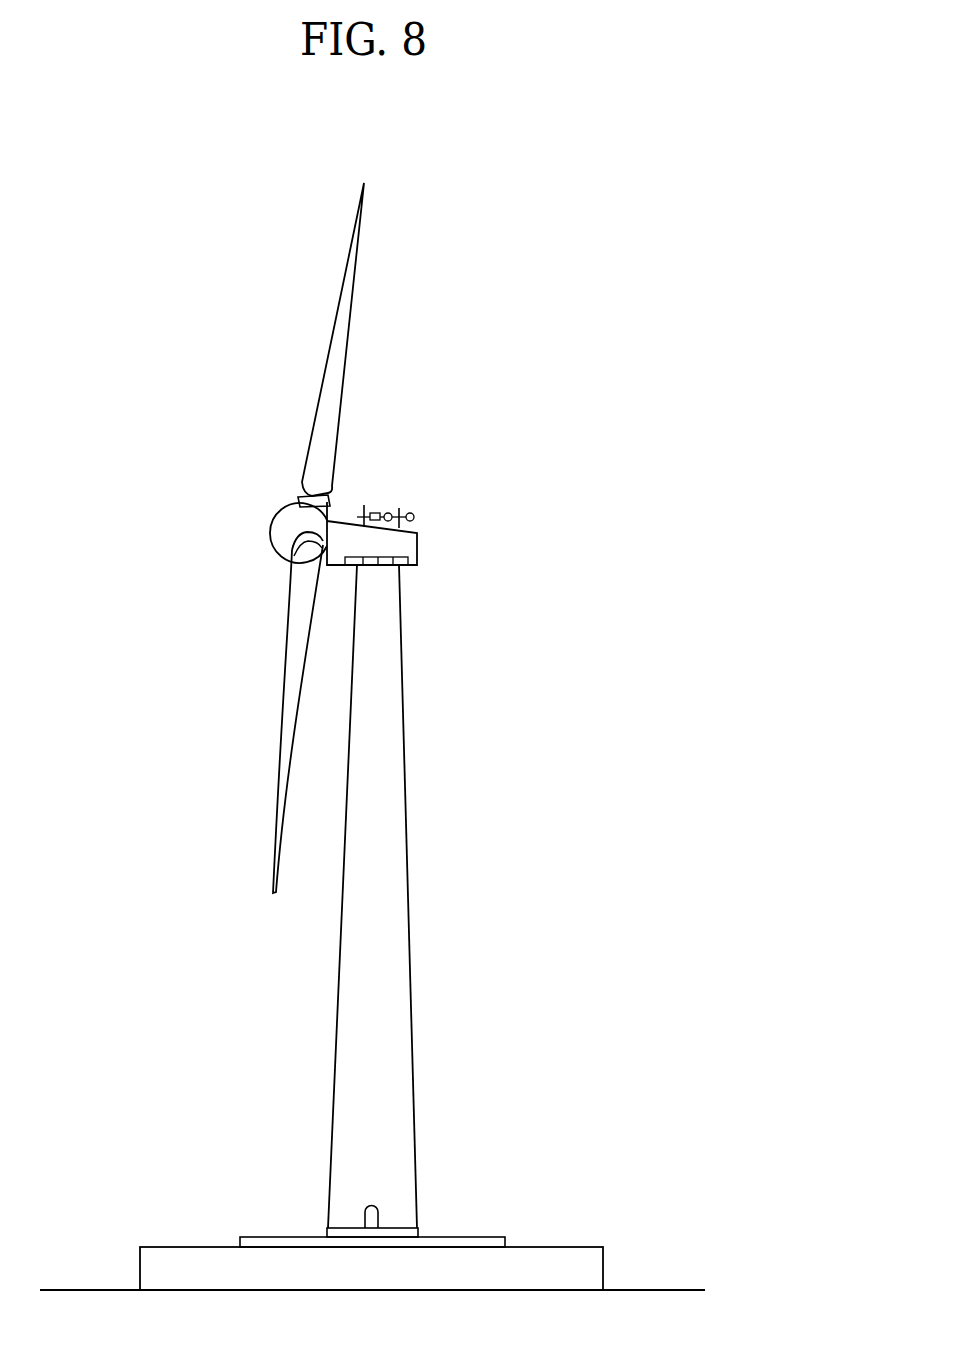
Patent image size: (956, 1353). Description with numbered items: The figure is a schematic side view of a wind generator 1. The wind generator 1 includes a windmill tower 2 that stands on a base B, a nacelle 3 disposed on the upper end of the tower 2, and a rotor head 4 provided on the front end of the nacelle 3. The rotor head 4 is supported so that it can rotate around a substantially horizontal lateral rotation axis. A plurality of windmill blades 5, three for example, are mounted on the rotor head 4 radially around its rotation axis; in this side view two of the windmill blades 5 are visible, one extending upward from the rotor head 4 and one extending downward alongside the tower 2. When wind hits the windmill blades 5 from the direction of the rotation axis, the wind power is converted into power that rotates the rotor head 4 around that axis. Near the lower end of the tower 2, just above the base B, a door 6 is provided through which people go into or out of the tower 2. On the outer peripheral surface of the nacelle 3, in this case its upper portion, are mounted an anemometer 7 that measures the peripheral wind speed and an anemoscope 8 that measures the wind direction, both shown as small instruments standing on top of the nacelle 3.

The wind generator 1 is at (518, 448).
The windmill tower 2 is at (405, 757).
The nacelle 3 is at (408, 470).
The rotor head 4 is at (270, 532).
The windmill blades 5 is at (353, 285).
The door 6 is at (373, 1205).
The anemometer 7 is at (414, 517).
The anemoscope 8 is at (366, 505).
The base B is at (563, 1247).